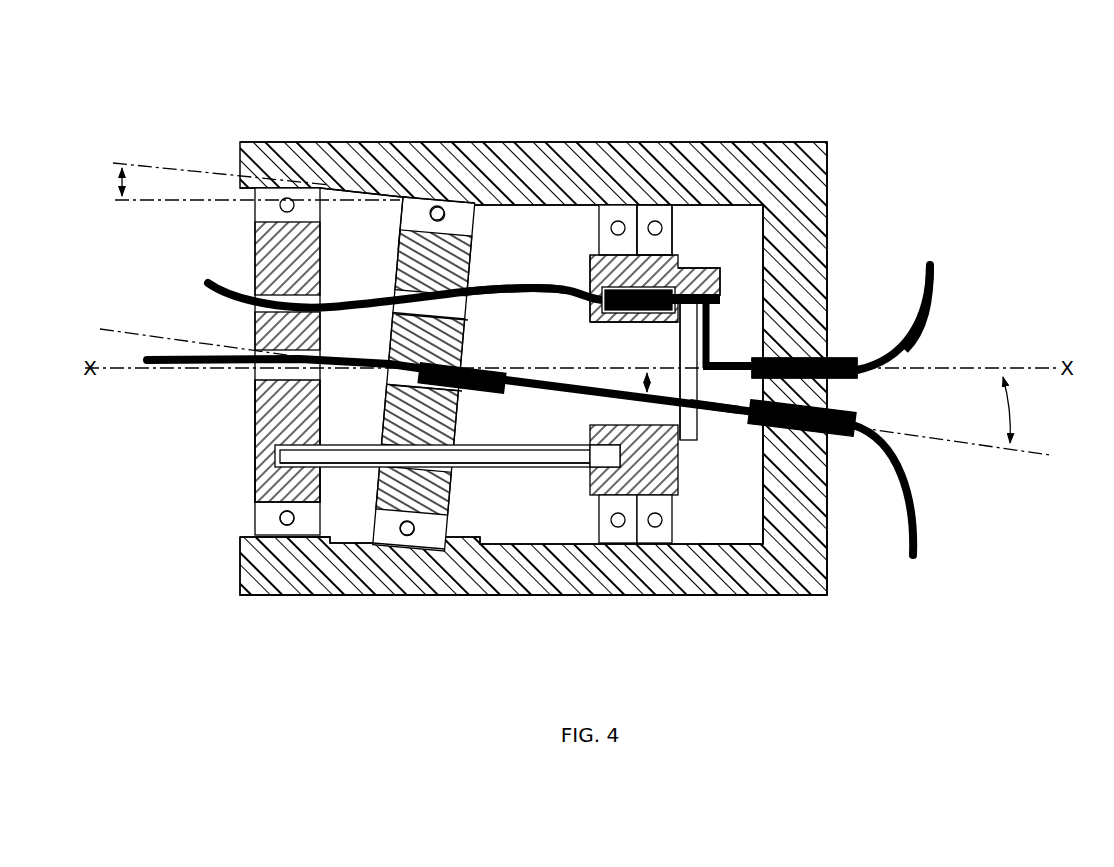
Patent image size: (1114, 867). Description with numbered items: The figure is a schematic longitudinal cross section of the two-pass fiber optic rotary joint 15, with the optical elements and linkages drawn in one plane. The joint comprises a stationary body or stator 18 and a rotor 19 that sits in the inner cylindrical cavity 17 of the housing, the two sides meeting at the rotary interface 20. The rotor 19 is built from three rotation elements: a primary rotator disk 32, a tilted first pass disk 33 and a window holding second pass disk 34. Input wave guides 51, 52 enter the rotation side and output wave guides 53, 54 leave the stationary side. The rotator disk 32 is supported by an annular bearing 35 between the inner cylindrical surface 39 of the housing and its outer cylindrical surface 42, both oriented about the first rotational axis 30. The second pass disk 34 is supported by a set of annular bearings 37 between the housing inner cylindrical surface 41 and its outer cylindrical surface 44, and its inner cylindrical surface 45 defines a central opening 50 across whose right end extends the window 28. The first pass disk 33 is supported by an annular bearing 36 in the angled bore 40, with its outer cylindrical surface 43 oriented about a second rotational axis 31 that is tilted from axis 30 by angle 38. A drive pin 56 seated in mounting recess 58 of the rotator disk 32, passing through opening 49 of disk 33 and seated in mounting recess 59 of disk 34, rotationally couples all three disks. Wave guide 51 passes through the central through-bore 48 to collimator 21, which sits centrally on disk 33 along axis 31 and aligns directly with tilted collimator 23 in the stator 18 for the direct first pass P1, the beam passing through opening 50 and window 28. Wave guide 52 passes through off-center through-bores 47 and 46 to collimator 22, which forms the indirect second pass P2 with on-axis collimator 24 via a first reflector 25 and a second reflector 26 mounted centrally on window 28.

The fiber optic rotary joint 15 is at (607, 48).
The inner cylindrical cavity 17 is at (519, 243).
The stationary connection element 18 is at (830, 240).
The rotating connection element 19 is at (214, 507).
The rotary interface 20 is at (729, 432).
The collimator 21 is at (485, 404).
The collimator 22 is at (684, 284).
The collimator 23 is at (801, 433).
The collimator 24 is at (840, 353).
The first reflector 25 is at (729, 296).
The second reflector 26 is at (716, 386).
The window 28 is at (676, 338).
The first rotational axis 30 is at (979, 367).
The second rotational axis 31 is at (971, 456).
The primary rotator disk 32 is at (254, 431).
The first pass disk 33 is at (393, 248).
The second pass disk 34 is at (578, 264).
The annular bearing 35 is at (264, 522).
The annular bearing 36 is at (461, 209).
The annular bearings 37 is at (649, 202).
The angle 38 is at (121, 183).
The inner cylindrical surface 39 is at (312, 526).
The inner cylindrical surface 40 is at (384, 204).
The inner cylindrical surface 41 is at (588, 208).
The outer cylindrical surface 42 is at (273, 226).
The outer cylindrical surface 43 is at (396, 520).
The outer cylindrical surface 44 is at (664, 246).
The inner cylindrical surface 45 is at (615, 323).
The through-bore 46 is at (395, 293).
The through-bore 47 is at (252, 307).
The through-bore 48 is at (262, 373).
The opening 49 is at (383, 440).
The central annular opening 50 is at (636, 358).
The input wave guide 51 is at (157, 352).
The input wave guide 52 is at (506, 304).
The output wave guide 53 is at (919, 512).
The output wave guide 54 is at (924, 313).
The drive pin 56 is at (518, 470).
The mounting recess 58 is at (282, 477).
The mounting recess 59 is at (597, 466).
The first optical pass P1 is at (710, 420).
The second optical pass P2 is at (832, 356).